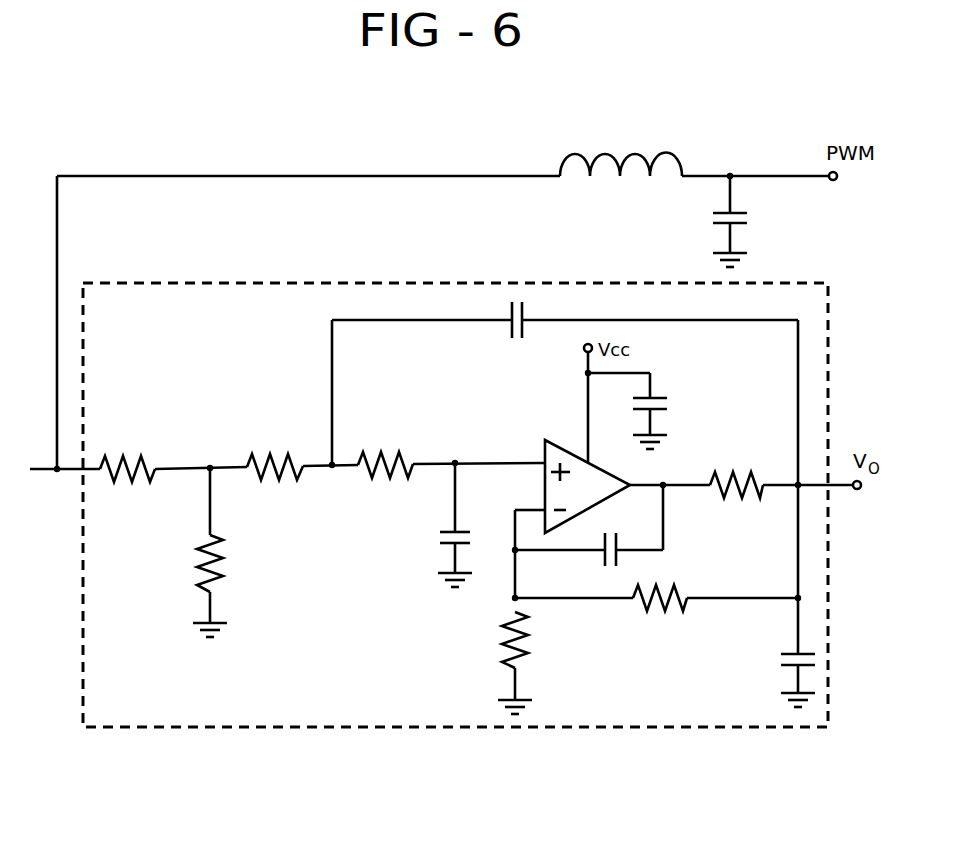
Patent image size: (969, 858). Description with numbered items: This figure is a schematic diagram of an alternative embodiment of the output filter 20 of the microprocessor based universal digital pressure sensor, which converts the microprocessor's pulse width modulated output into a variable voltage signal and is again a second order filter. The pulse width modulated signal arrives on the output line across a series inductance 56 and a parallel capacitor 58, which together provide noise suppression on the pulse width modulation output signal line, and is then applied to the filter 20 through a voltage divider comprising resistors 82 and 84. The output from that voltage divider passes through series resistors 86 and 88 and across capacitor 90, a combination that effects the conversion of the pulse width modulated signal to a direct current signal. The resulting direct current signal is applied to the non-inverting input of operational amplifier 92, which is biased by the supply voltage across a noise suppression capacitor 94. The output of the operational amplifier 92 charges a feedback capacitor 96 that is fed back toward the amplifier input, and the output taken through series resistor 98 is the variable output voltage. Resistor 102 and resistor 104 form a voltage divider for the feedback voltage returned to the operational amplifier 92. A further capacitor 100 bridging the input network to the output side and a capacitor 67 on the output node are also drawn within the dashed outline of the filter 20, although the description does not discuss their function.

The output filter 20 is at (384, 283).
The series inductance 56 is at (572, 150).
The parallel capacitor 58 is at (738, 212).
The resistor 82 is at (130, 456).
The resistor 84 is at (202, 571).
The series resistor 86 is at (283, 456).
The series resistor 88 is at (385, 455).
The capacitor 90 is at (448, 532).
The operational amplifier 92 is at (543, 443).
The noise suppression capacitor 94 is at (658, 398).
The feedback capacitor 96 is at (602, 560).
The series resistor 98 is at (742, 496).
The capacitor 100 is at (505, 330).
The resistor 102 is at (665, 612).
The resistor 104 is at (500, 645).
The capacitor 67 is at (790, 653).